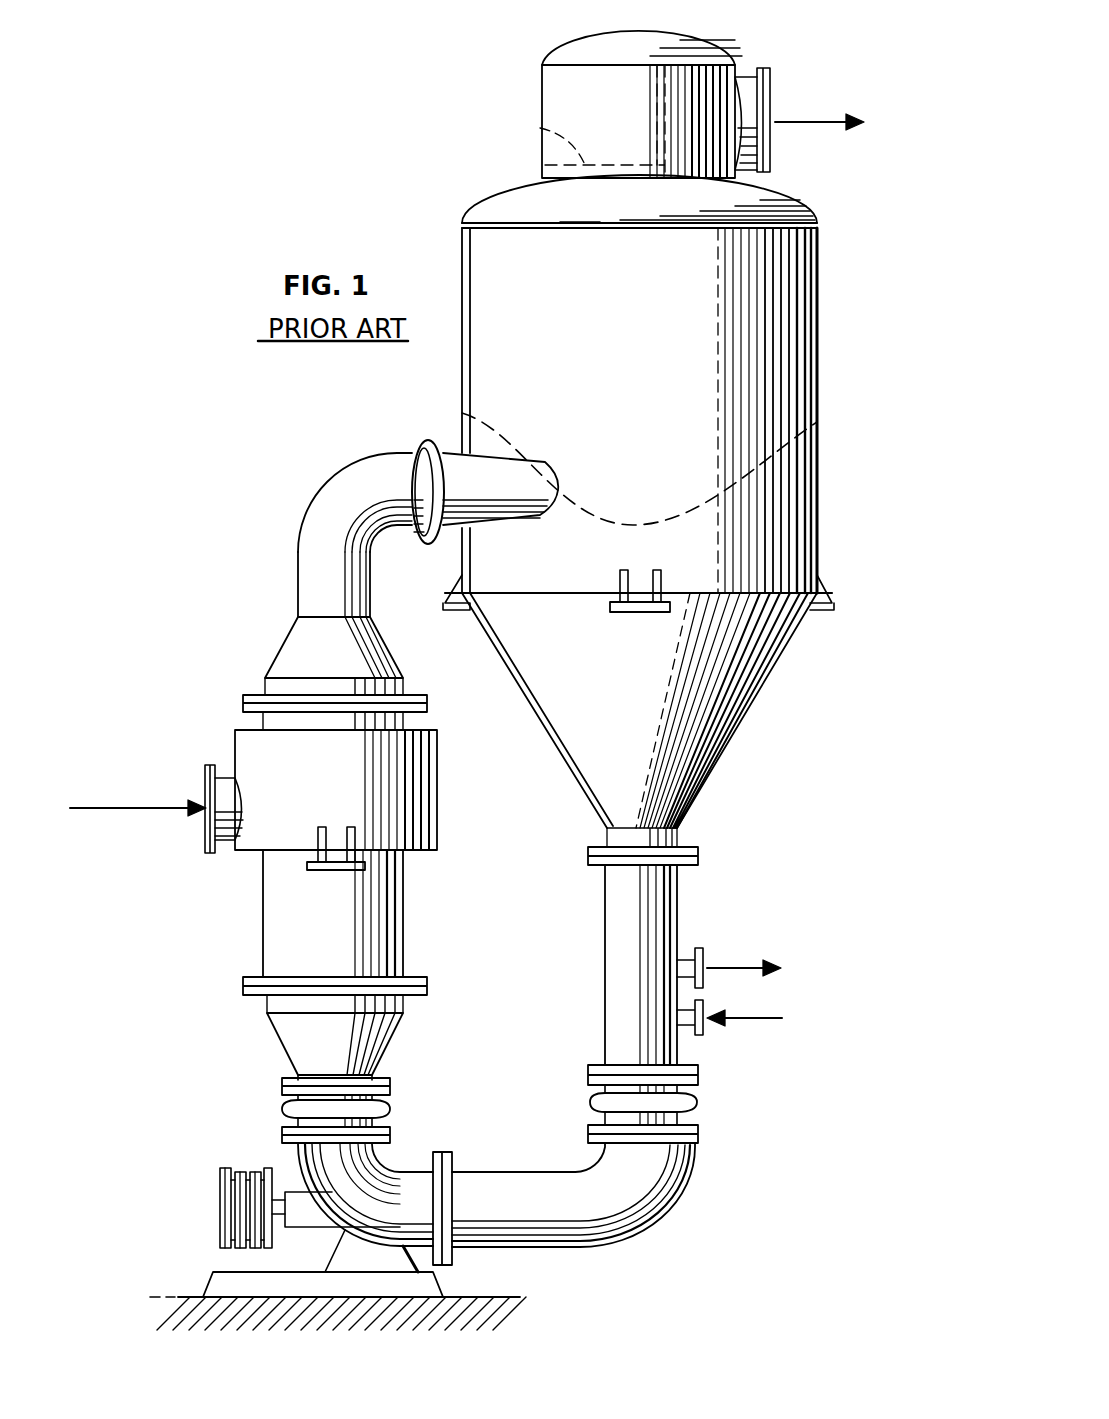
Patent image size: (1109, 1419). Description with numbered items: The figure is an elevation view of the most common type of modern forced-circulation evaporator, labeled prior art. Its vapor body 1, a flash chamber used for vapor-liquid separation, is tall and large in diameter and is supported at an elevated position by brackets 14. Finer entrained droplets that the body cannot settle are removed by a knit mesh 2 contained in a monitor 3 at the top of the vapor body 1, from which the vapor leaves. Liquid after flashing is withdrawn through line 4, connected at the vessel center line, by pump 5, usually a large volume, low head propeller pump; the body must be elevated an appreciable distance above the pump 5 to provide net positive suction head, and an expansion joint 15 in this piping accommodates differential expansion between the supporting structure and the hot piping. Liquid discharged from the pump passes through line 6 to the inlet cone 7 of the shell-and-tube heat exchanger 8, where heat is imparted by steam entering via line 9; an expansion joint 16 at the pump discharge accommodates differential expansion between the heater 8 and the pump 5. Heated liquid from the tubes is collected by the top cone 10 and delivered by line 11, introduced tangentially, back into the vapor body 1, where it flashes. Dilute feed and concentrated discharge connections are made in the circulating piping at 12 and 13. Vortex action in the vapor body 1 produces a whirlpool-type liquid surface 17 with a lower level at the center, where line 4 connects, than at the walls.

The vapor body 1 is at (808, 352).
The knit mesh 2 is at (532, 133).
The monitor 3 is at (552, 92).
The line 4 is at (620, 917).
The pump 5 is at (385, 1186).
The line 6 is at (320, 1078).
The inlet cone 7 is at (288, 1032).
The shell-and-tube heat exchanger 8 is at (285, 916).
The line 9 is at (205, 828).
The top cone 10 is at (302, 660).
The line 11 is at (332, 505).
The connection 12 is at (730, 962).
The connection 13 is at (737, 1023).
The brackets 14 is at (642, 612).
The expansion joint 15 is at (695, 1103).
The expansion joint 16 is at (292, 1106).
The liquid surface 17 is at (719, 483).